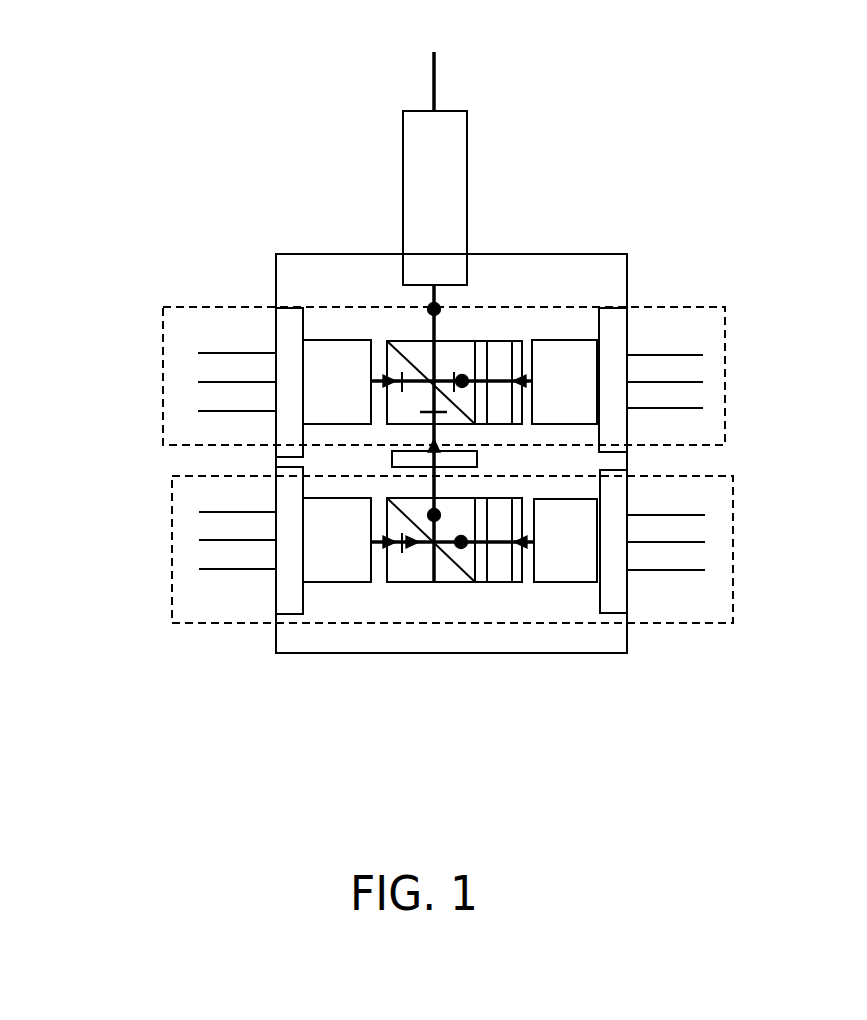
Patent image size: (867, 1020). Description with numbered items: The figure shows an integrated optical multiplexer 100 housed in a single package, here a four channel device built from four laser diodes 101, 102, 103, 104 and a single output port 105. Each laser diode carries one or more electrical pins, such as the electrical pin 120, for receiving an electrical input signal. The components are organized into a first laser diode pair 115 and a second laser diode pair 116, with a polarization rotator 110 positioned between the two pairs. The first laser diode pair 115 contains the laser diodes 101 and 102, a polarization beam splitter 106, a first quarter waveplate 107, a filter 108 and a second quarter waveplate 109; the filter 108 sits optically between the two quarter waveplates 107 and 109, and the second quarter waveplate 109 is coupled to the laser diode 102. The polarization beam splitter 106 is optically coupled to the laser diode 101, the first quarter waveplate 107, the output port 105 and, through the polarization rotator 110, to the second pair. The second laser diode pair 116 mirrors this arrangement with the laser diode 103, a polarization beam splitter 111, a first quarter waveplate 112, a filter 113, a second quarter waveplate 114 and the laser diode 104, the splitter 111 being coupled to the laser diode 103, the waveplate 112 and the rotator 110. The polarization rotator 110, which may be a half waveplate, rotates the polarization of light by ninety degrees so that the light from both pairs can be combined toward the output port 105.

The multiplexer 100 is at (260, 135).
The laser diode 101 is at (288, 306).
The laser diode 102 is at (630, 438).
The laser diode 103 is at (283, 610).
The laser diode 104 is at (632, 598).
The output port 105 is at (473, 128).
The polarization beam splitter 106 is at (404, 338).
The first quarter waveplate 107 is at (483, 338).
The filter 108 is at (512, 338).
The second quarter waveplate 109 is at (525, 338).
The polarization rotator 110 is at (485, 445).
The polarization beam splitter 111 is at (413, 585).
The first quarter waveplate 112 is at (483, 585).
The filter 113 is at (509, 585).
The second quarter waveplate 114 is at (527, 585).
The first laser diode pair 115 is at (730, 372).
The second laser diode pair 116 is at (737, 560).
The electrical pin 120 is at (195, 382).